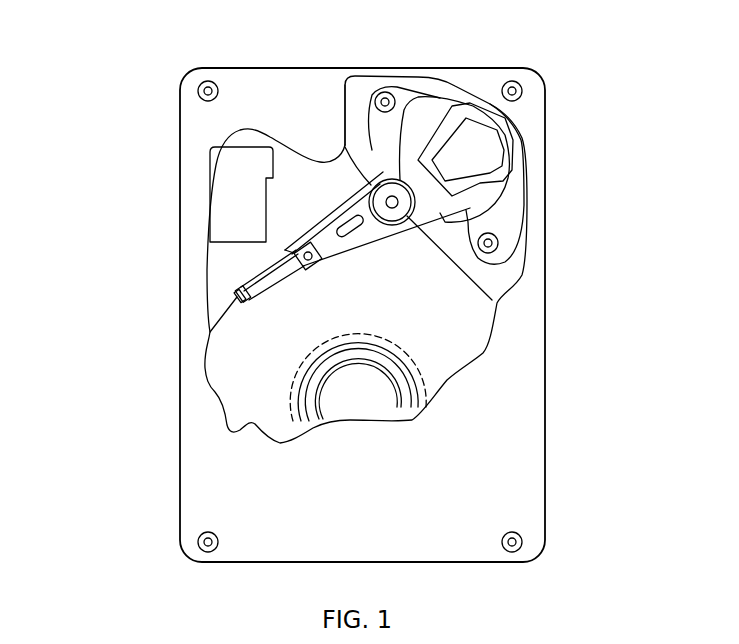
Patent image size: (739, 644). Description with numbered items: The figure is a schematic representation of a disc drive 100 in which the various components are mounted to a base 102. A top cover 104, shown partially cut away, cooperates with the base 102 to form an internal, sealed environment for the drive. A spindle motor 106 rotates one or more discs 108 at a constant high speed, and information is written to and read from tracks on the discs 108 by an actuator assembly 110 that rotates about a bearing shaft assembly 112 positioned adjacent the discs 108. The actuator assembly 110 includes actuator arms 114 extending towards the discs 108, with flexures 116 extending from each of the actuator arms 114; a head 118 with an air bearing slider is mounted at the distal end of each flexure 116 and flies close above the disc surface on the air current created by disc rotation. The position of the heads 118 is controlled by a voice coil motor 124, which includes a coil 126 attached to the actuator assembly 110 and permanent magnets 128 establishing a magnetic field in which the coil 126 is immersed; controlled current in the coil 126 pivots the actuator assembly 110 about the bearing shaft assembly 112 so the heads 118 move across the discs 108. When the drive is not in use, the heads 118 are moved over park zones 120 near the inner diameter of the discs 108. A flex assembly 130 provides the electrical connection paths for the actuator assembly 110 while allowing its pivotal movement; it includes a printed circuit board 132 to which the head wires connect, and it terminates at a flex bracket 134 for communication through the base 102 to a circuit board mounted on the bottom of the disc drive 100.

The disc drive 100 is at (162, 63).
The base 102 is at (218, 255).
The top cover 104 is at (218, 475).
The spindle motor 106 is at (357, 400).
The discs 108 is at (455, 356).
The actuator assembly 110 is at (371, 215).
The bearing shaft assembly 112 is at (393, 203).
The actuator arms 114 is at (352, 248).
The flexures 116 is at (264, 285).
The head 118 is at (240, 302).
The park zones 120 is at (290, 404).
The voice coil motor 124 is at (428, 75).
The coil 126 is at (513, 150).
The permanent magnets 128 is at (410, 121).
The flex assembly 130 is at (338, 208).
The printed circuit board 132 is at (343, 142).
The flex bracket 134 is at (233, 188).